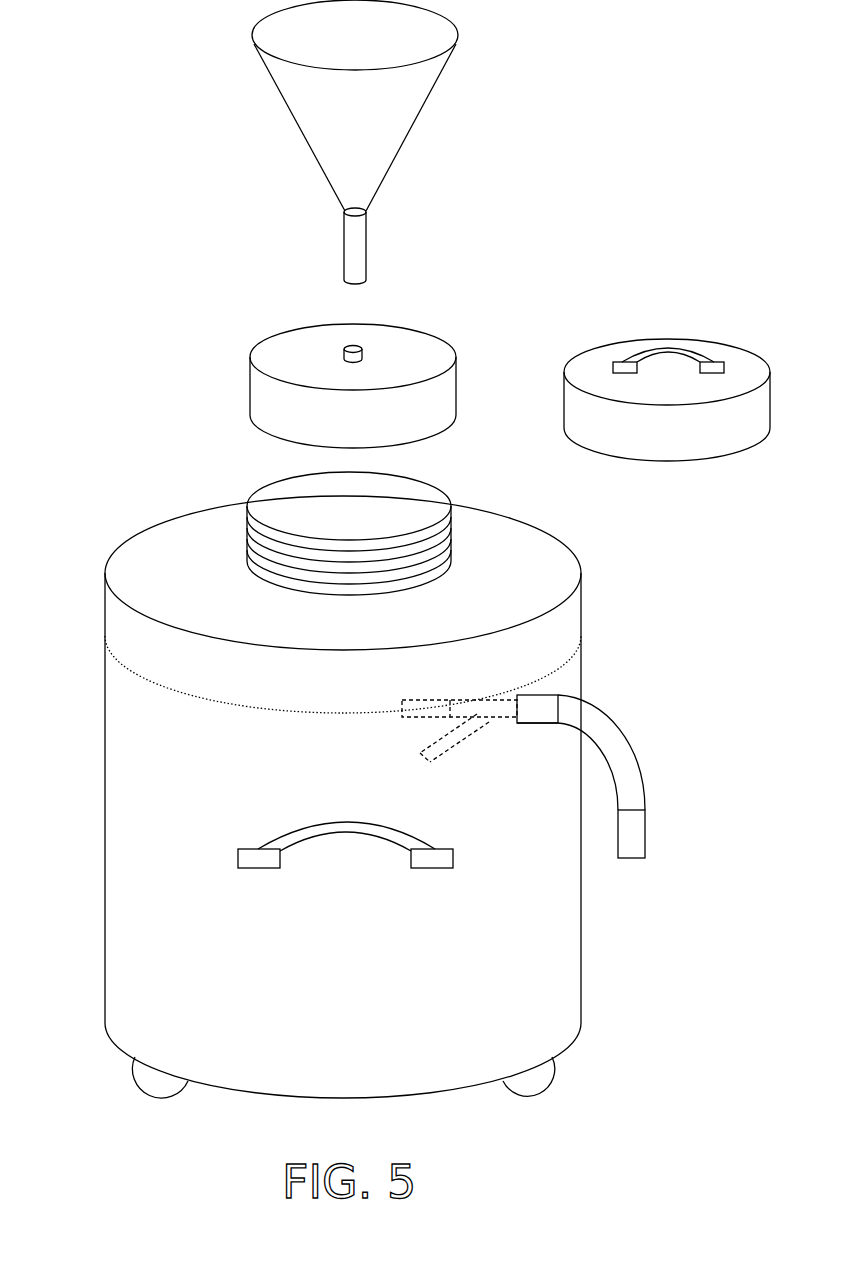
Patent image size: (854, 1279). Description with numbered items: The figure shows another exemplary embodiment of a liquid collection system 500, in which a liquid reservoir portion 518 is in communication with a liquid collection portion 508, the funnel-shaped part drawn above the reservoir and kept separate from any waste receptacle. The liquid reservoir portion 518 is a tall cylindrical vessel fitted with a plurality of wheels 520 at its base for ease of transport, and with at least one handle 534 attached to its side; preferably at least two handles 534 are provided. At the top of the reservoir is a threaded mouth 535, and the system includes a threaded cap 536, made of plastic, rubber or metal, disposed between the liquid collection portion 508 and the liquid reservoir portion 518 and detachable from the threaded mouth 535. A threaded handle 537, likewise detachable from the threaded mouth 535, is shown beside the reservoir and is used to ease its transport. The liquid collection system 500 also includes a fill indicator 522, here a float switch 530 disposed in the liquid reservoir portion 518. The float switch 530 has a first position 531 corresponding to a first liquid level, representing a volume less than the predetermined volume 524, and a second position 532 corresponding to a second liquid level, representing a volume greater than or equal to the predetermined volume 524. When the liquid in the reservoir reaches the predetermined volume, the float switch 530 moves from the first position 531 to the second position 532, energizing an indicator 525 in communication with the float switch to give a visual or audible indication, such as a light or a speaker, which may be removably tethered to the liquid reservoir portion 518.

The liquid collection system 500 is at (97, 48).
The liquid collection portion 508 is at (288, 108).
The liquid reservoir portion 518 is at (105, 785).
The wheels 520 is at (160, 1090).
The fill indicator 522 is at (540, 724).
The predetermined volume 524 is at (152, 685).
The indicator 525 is at (627, 757).
The float switch 530 is at (545, 691).
The first position 531 is at (428, 748).
The second position 532 is at (430, 700).
The handle 534 is at (325, 837).
The threaded mouth 535 is at (400, 492).
The threaded cap 536 is at (273, 352).
The threaded handle 537 is at (725, 352).